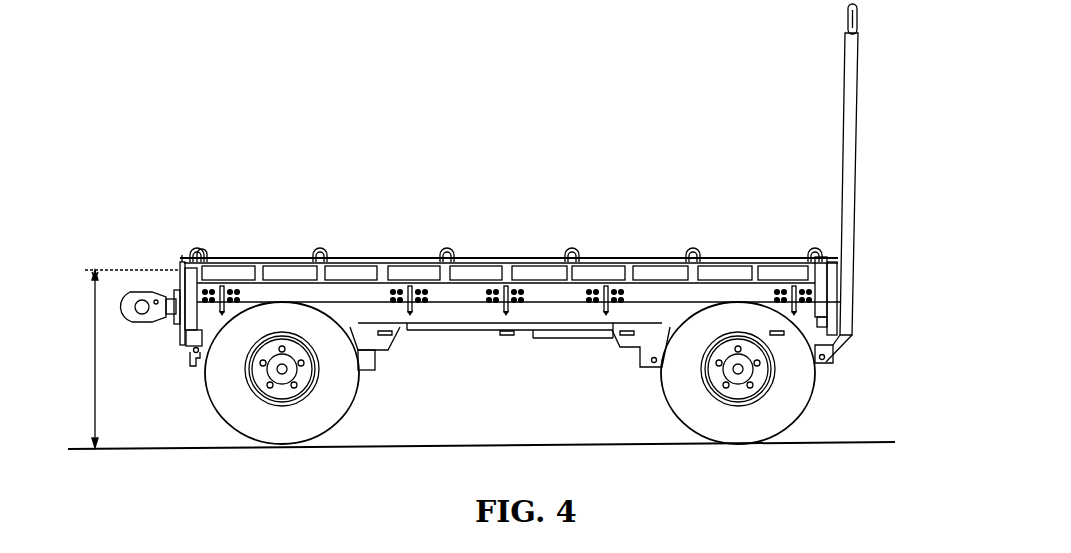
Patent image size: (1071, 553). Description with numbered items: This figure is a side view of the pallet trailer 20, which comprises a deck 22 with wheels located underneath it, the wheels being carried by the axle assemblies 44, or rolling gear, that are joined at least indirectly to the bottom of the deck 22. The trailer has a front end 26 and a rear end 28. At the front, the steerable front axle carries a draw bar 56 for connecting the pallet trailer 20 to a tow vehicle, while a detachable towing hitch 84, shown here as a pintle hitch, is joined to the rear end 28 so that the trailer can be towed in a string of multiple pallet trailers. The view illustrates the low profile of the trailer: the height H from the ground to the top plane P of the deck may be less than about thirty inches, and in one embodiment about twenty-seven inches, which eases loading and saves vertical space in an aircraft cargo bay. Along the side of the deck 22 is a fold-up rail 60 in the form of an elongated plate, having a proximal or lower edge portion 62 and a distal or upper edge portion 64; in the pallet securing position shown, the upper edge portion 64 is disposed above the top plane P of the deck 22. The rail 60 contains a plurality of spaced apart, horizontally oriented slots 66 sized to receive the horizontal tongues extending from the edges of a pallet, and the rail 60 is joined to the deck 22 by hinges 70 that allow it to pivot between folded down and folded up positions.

The pallet trailer 20 is at (613, 121).
The deck 22 is at (473, 308).
The front end 26 is at (861, 265).
The rear end 28 is at (117, 244).
The axle assemblies 44 is at (785, 393).
The draw bar 56 is at (857, 135).
The fold-up rail 60 is at (438, 295).
The proximal portion 62 is at (547, 302).
The distal portion 64 is at (506, 262).
The slots 66 is at (465, 268).
The hinges 70 is at (607, 317).
The detachable towing hitch 84 is at (141, 337).
The height H is at (95, 355).
The top plane P is at (133, 268).